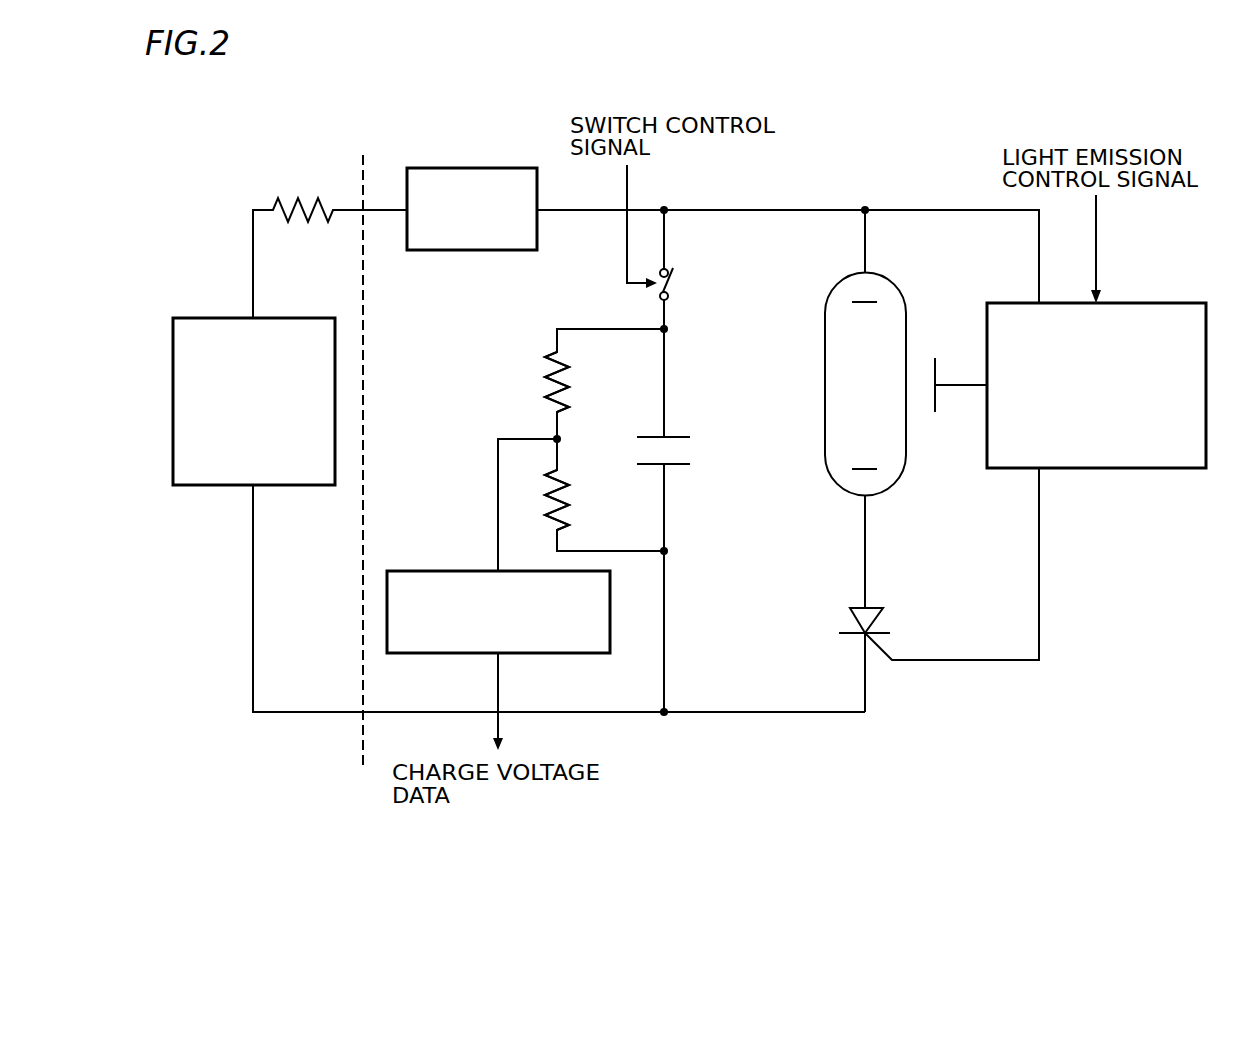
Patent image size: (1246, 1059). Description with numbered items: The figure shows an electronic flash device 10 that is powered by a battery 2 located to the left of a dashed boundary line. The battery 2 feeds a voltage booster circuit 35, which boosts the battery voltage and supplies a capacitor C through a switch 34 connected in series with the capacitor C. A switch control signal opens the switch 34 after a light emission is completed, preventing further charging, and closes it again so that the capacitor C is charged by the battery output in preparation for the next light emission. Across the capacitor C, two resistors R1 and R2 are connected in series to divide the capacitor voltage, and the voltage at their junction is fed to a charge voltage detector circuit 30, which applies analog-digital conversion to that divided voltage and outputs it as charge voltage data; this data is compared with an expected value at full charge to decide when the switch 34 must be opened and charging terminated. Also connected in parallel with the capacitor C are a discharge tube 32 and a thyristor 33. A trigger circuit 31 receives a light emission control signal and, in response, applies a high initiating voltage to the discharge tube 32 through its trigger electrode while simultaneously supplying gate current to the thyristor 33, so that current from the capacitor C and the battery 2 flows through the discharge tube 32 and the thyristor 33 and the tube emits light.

The battery 2 is at (200, 317).
The electronic flash device 10 is at (446, 111).
The charge voltage detector circuit 30 is at (430, 569).
The trigger circuit 31 is at (1165, 302).
The discharge tube 32 is at (904, 305).
The thyristor 33 is at (881, 618).
The switch 34 is at (677, 283).
The voltage booster circuit 35 is at (502, 168).
The resistor R1 is at (576, 382).
The resistor R2 is at (576, 500).
The capacitor C is at (677, 451).